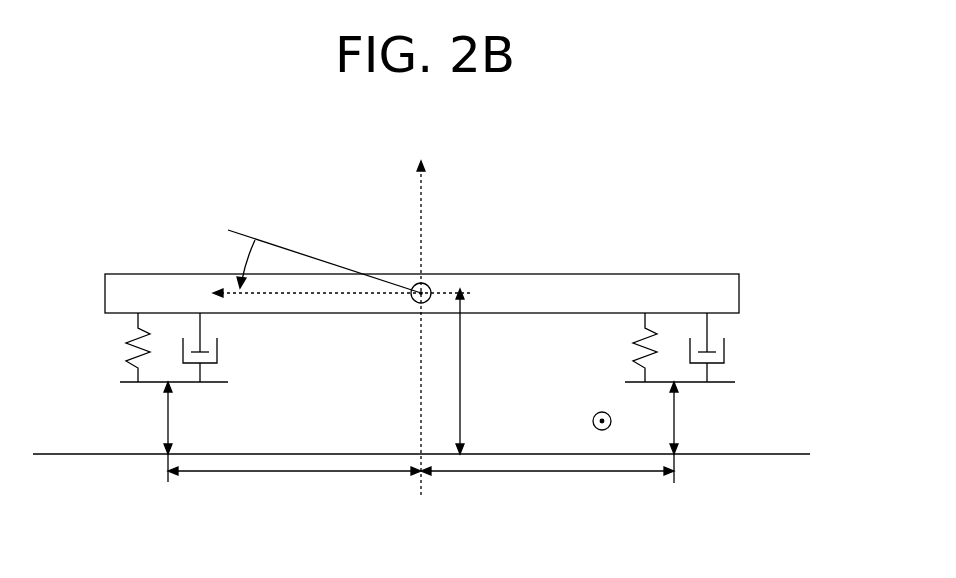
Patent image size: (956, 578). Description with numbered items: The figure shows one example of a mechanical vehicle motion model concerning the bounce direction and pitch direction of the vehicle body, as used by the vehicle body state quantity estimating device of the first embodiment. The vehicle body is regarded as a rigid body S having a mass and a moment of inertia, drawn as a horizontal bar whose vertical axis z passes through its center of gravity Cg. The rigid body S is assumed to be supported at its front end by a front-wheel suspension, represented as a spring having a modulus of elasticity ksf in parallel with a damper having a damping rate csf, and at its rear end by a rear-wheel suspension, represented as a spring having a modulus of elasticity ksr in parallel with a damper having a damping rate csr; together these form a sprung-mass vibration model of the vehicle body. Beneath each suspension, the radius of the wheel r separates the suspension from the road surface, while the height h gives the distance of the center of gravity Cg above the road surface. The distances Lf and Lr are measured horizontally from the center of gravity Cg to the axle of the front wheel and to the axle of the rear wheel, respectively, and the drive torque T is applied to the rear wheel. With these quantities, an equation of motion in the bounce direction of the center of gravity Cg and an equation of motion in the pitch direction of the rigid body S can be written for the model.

The rigid body S is at (675, 274).
The center of gravity Cg is at (427, 283).
The vertical axis z is at (408, 328).
The height of the center of gravity h is at (472, 371).
The modulus of elasticity of the front-wheel suspension ksf is at (116, 347).
The damping rate of the front-wheel suspension csf is at (219, 347).
The modulus of elasticity of the rear-wheel suspension ksr is at (622, 347).
The damping rate of the rear-wheel suspension csr is at (727, 347).
The radius of the wheel r is at (430, 432).
The distance from the center of gravity to the front axle Lf is at (294, 488).
The distance from the center of gravity to the rear axle Lr is at (547, 488).
The drive torque T is at (590, 422).